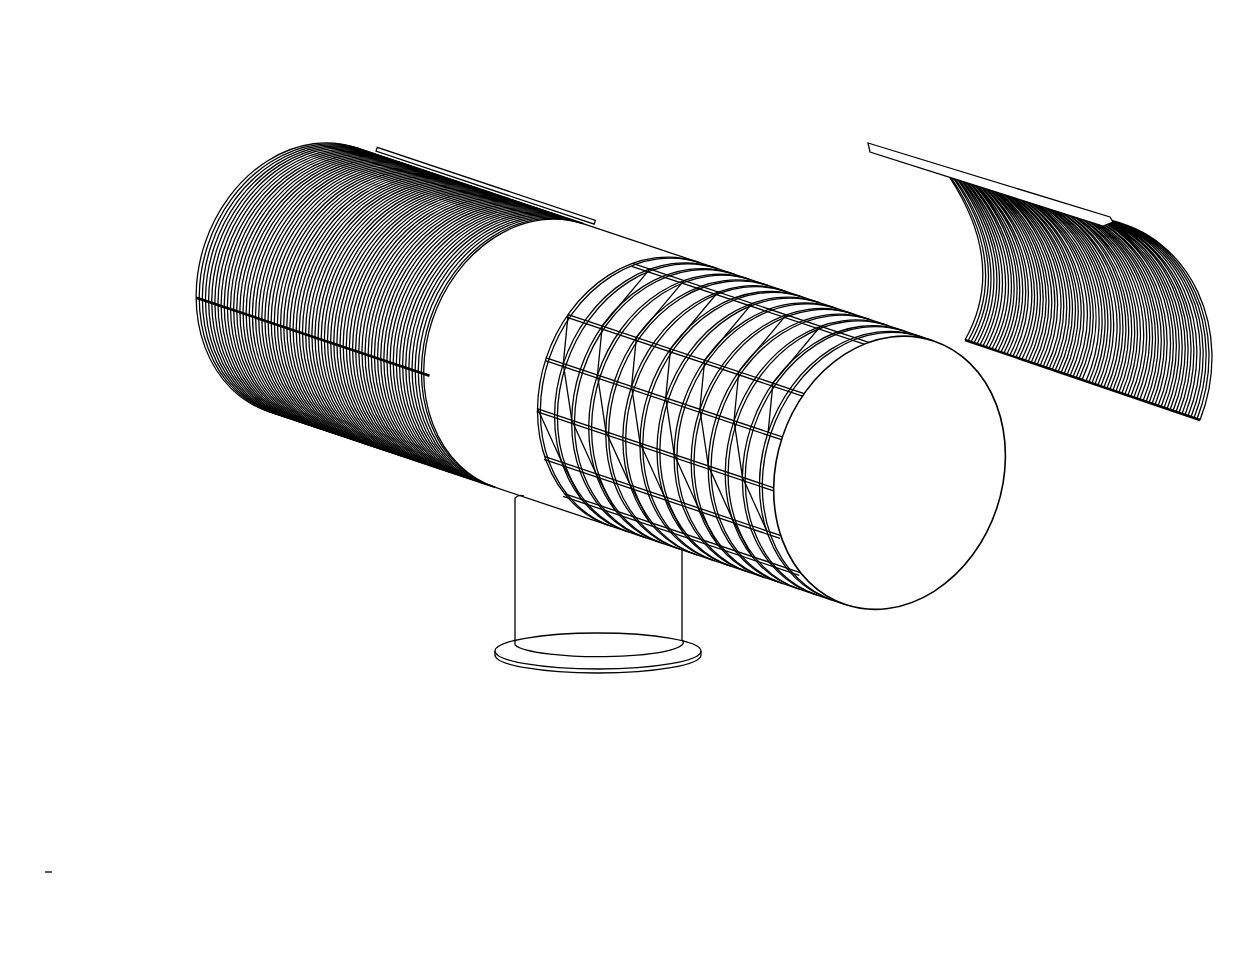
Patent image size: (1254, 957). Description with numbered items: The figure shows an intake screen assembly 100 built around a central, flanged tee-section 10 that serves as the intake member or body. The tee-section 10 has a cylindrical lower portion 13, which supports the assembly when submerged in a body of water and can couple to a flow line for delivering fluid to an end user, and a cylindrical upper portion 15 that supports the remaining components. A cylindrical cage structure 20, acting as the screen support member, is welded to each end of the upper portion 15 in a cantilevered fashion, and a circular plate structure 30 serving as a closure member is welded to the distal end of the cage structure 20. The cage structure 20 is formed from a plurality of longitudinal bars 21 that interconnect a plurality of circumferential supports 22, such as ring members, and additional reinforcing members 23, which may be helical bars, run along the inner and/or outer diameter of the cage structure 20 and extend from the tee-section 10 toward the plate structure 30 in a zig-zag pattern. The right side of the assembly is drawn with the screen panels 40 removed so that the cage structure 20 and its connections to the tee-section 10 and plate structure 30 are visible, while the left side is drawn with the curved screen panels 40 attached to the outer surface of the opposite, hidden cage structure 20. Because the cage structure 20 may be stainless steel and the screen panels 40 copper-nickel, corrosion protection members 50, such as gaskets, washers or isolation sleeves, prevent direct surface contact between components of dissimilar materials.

The intake screen assembly 100 is at (538, 138).
The tee-section 10 is at (490, 514).
The cylindrical lower portion 13 is at (520, 572).
The cylindrical upper portion 15 is at (655, 242).
The cage structure 20 is at (868, 310).
The bars 21 is at (695, 457).
The circumferential supports 22 is at (785, 398).
The reinforcing members 23 is at (600, 340).
The plate structure 30 is at (958, 565).
The screen panel 40 is at (238, 190).
The corrosion protection member 50 is at (1133, 367).